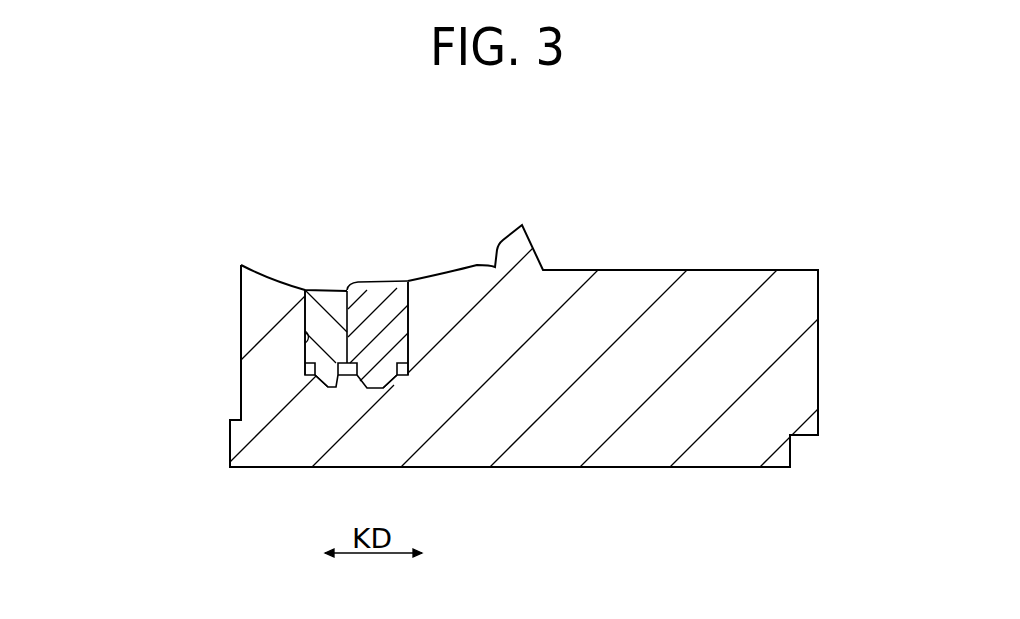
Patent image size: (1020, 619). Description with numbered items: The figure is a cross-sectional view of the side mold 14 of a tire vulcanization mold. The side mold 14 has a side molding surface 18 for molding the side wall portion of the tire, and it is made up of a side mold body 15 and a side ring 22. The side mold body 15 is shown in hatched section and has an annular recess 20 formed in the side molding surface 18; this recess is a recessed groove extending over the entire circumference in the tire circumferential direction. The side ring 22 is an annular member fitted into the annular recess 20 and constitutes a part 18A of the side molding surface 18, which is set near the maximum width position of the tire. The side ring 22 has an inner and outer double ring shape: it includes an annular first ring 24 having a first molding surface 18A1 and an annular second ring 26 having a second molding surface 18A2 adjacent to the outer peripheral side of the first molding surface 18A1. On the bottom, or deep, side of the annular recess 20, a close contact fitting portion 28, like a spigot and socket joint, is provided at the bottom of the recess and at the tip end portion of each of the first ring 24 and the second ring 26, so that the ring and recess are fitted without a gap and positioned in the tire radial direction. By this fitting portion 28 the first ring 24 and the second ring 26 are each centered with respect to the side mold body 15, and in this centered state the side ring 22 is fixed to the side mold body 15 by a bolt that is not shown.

The side mold 14 is at (567, 152).
The side mold body 15 is at (717, 277).
The side molding surface 18 is at (460, 265).
The part of the side molding surface 18A is at (353, 186).
The first molding surface 18A1 is at (372, 283).
The second molding surface 18A2 is at (305, 289).
The annular recess 20 is at (303, 342).
The side ring 22 is at (370, 407).
The first ring 24 is at (396, 304).
The second ring 26 is at (313, 306).
The close contact fitting portion 28 is at (318, 385).